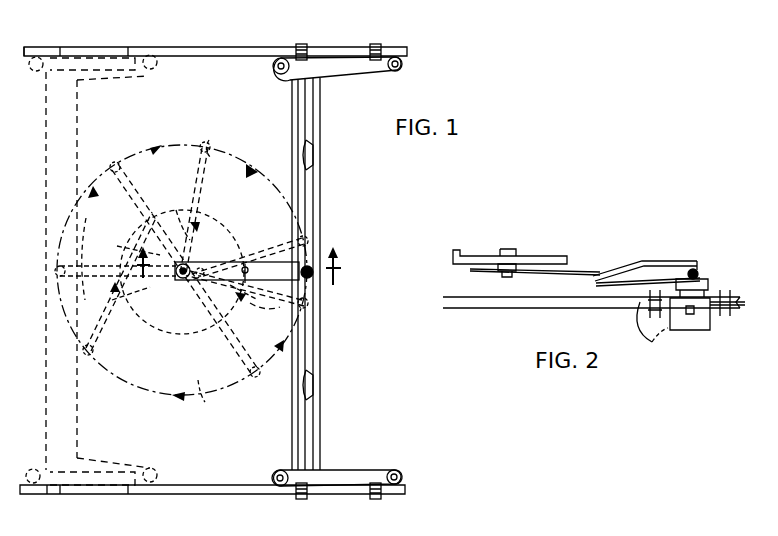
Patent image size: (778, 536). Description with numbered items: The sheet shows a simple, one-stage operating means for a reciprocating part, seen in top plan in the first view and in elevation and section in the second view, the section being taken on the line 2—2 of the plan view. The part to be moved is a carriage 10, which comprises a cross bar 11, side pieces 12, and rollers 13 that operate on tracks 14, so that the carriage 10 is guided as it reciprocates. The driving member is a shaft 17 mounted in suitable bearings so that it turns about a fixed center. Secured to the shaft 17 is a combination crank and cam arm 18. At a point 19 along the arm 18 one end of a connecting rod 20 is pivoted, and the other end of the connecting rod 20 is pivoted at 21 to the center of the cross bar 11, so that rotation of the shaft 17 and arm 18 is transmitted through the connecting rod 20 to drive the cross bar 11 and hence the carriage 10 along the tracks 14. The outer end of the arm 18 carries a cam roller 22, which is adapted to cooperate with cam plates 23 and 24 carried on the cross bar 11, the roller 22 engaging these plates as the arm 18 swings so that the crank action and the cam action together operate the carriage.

In FIG. 1, the section line 2 is at (235, 276).
In FIG. 1, the carriage 10 is at (320, 198).
In FIG. 1, the cross bar 11 is at (316, 342).
In FIG. 2, the cross bar 11 is at (722, 305).
In FIG. 1, the side pieces 12 is at (352, 72).
In FIG. 1, the rollers 13 is at (307, 50).
In FIG. 2, the rollers 13 is at (656, 334).
In FIG. 1, the tracks 14 is at (203, 47).
In FIG. 1, the shaft 17 is at (184, 281).
In FIG. 2, the shaft 17 is at (510, 250).
In FIG. 1, the combination crank and cam arm 18 is at (135, 205).
In FIG. 2, the combination crank and cam arm 18 is at (616, 262).
In FIG. 1, the pivot point 19 is at (208, 352).
In FIG. 2, the pivot point 19 is at (600, 280).
In FIG. 1, the connecting rod 20 is at (176, 210).
In FIG. 2, the connecting rod 20 is at (640, 283).
In FIG. 1, the pivot 21 is at (182, 273).
In FIG. 2, the pivot 21 is at (708, 281).
In FIG. 1, the cam roller 22 is at (113, 162).
In FIG. 2, the cam roller 22 is at (696, 270).
In FIG. 1, the cam plate 23 is at (313, 385).
In FIG. 1, the cam plate 24 is at (313, 155).